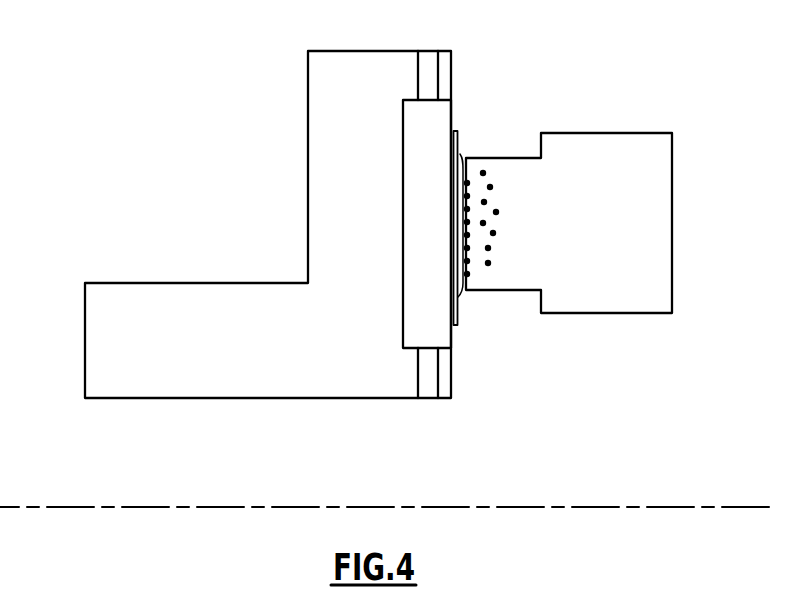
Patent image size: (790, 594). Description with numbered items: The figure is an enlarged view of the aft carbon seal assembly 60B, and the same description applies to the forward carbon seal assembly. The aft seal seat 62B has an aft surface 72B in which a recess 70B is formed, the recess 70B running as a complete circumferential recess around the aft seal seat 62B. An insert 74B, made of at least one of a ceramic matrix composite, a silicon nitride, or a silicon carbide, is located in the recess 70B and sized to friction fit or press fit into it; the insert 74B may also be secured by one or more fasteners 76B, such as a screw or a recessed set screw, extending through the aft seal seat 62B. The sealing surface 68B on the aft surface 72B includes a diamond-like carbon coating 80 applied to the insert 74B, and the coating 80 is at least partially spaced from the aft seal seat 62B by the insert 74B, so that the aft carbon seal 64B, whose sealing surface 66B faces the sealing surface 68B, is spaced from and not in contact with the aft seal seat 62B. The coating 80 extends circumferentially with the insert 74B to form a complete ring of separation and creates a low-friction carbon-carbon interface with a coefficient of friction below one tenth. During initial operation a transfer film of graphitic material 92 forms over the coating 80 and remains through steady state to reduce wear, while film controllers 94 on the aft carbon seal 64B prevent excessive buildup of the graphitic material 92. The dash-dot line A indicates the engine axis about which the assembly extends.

The aft carbon seal assembly 60B is at (510, 377).
The aft seal seat 62B is at (372, 170).
The aft carbon seal 64B is at (633, 226).
The sealing surface 66B is at (460, 296).
The sealing surface 68B is at (457, 145).
The recess 70B is at (400, 310).
The aft surface 72B is at (452, 382).
The insert 74B is at (445, 227).
The fasteners 76B is at (427, 63).
The diamond-like carbon coating 80 is at (458, 325).
The graphitic material 92 is at (460, 154).
The film controllers 94 is at (489, 268).
The axis A is at (668, 508).